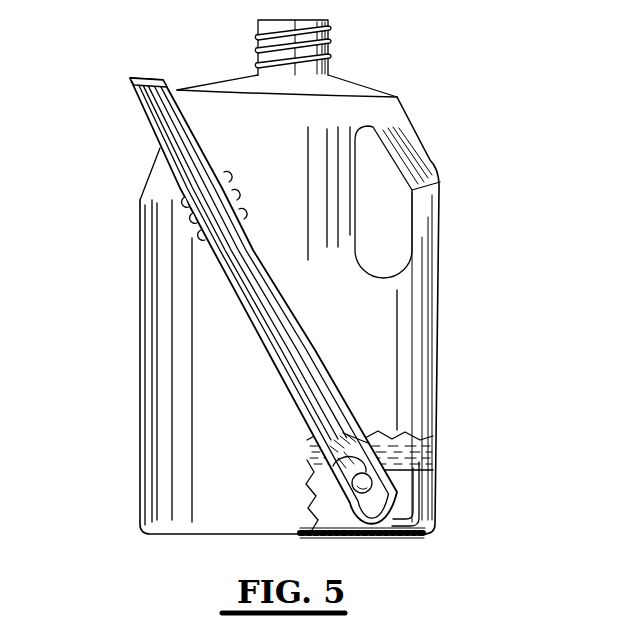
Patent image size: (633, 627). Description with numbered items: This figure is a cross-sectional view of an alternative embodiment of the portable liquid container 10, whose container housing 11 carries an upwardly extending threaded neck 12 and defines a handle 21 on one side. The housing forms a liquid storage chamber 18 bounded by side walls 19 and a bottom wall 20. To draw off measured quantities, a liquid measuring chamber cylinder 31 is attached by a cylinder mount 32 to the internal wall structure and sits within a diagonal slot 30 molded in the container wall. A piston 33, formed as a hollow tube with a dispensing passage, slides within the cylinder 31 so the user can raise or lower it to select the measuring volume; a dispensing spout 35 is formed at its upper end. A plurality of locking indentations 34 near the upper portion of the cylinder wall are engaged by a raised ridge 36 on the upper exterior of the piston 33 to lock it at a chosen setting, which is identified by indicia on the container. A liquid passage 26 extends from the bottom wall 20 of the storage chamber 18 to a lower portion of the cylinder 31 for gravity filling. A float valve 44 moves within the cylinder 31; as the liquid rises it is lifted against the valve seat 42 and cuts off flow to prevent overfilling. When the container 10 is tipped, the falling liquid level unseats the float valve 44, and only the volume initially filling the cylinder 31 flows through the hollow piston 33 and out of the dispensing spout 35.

The portable liquid container 10 is at (448, 109).
The container housing 11 is at (140, 310).
The threaded neck 12 is at (330, 63).
The liquid storage chamber 18 is at (398, 430).
The side walls 19 is at (140, 393).
The bottom wall 20 is at (408, 446).
The handle 21 is at (413, 190).
The liquid passage 26 is at (416, 487).
The diagonal slot 30 is at (264, 347).
The liquid measuring chamber cylinder 31 is at (345, 536).
The cylinder mount 32 is at (426, 527).
The piston 33 is at (338, 437).
The locking indentations 34 is at (245, 214).
The dispensing spout 35 is at (132, 78).
The raised ridge 36 is at (235, 208).
The valve seat 42 is at (346, 466).
The float valve 44 is at (353, 490).